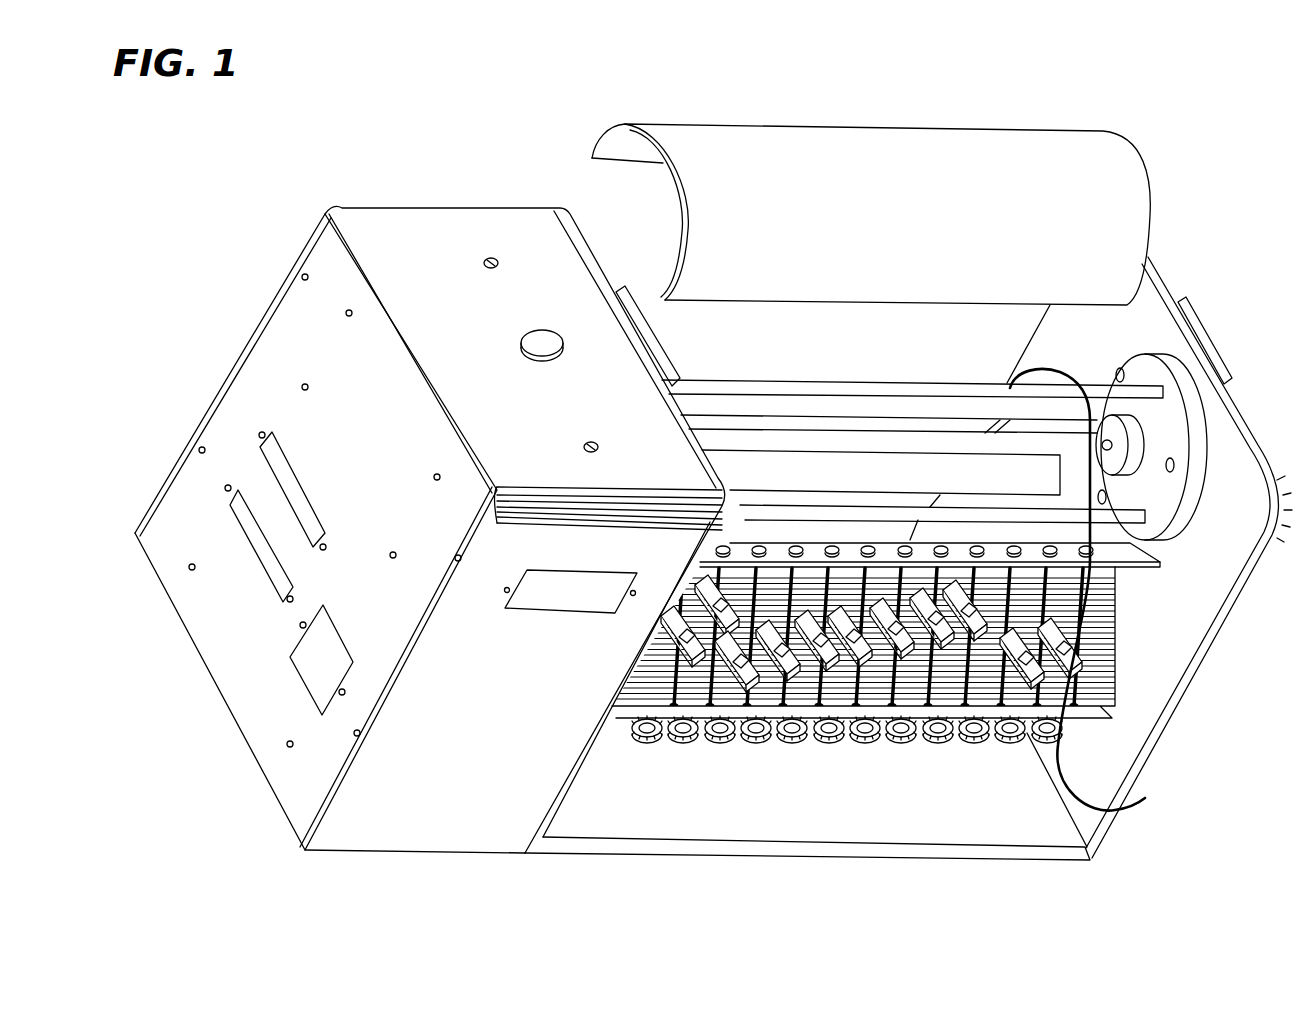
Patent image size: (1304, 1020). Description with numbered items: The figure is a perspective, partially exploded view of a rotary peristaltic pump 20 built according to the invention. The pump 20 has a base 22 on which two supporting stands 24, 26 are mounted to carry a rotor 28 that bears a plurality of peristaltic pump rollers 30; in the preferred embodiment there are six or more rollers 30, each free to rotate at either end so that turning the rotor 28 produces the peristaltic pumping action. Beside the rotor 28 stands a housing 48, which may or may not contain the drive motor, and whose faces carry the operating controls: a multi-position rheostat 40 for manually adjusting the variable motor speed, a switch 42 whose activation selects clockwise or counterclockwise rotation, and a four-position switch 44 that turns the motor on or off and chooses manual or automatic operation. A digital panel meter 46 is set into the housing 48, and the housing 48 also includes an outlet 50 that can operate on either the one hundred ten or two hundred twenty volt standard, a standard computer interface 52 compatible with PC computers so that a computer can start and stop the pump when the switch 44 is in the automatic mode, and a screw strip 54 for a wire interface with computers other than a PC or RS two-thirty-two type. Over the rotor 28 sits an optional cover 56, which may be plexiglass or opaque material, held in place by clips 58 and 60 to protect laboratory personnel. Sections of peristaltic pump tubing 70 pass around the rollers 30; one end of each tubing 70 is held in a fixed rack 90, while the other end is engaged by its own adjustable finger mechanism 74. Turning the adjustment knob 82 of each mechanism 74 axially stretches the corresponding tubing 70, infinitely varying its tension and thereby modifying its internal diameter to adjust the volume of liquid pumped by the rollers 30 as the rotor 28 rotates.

The peristaltic pump 20 is at (597, 207).
The base 22 is at (850, 862).
The supporting stand 24 is at (1240, 626).
The supporting stand 26 is at (604, 736).
The rotor 28 is at (872, 440).
The peristaltic pump rollers 30 is at (1170, 540).
The multi-position rheostat 40 is at (560, 352).
The switch 42 is at (497, 261).
The four-position switch 44 is at (598, 445).
The digital panel meter 46 is at (572, 604).
The housing 48 is at (512, 732).
The outlet 50 is at (340, 646).
The computer interface 52 is at (264, 562).
The screw strip 54 is at (302, 492).
The cover 56 is at (945, 212).
The clip 58 is at (1226, 350).
The clip 60 is at (617, 313).
The peristaltic pump tubing 70 is at (1145, 800).
The adjustable finger mechanism 74 is at (842, 682).
The adjustment knob 82 is at (970, 740).
The fixed rack 90 is at (922, 482).